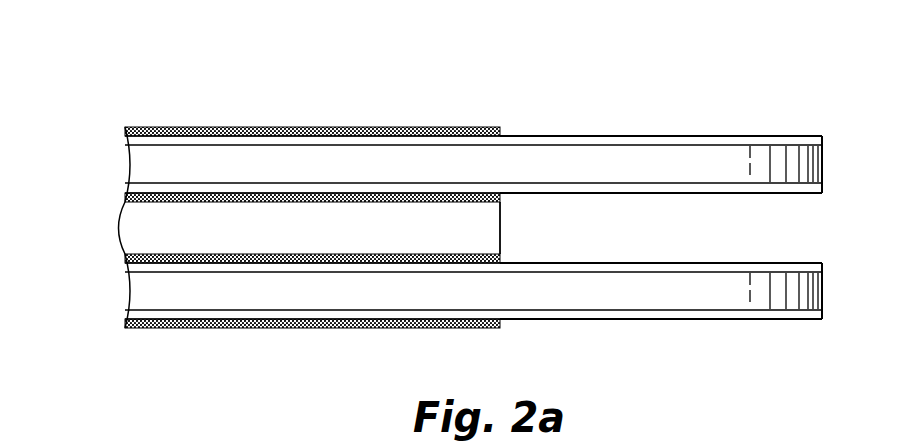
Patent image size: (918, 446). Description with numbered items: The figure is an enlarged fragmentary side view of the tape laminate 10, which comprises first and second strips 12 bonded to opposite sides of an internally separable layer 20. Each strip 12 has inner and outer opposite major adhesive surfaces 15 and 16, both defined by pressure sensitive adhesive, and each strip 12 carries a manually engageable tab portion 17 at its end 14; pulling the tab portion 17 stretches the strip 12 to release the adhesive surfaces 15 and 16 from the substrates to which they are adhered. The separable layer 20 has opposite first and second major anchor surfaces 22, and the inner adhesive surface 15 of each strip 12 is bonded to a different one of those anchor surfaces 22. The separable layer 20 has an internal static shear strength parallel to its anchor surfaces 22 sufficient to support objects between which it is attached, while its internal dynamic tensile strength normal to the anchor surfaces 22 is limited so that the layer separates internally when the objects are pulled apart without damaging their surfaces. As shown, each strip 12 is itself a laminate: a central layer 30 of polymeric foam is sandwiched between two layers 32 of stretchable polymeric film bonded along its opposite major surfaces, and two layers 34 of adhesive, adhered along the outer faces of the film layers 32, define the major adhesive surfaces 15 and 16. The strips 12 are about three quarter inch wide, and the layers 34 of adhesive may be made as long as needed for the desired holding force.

The tape laminate 10 is at (730, 69).
The strip 12 is at (583, 134).
The end 14 is at (823, 162).
The inner major adhesive surface 15 is at (203, 203).
The outer major adhesive surface 16 is at (273, 129).
The tab portion 17 is at (760, 136).
The internally separable layer 20 is at (487, 230).
The anchor surface 22 is at (330, 202).
The central layer of polymeric foam 30 is at (433, 155).
The layer of stretchable polymeric film 32 is at (158, 187).
The layer of adhesive 34 is at (125, 131).